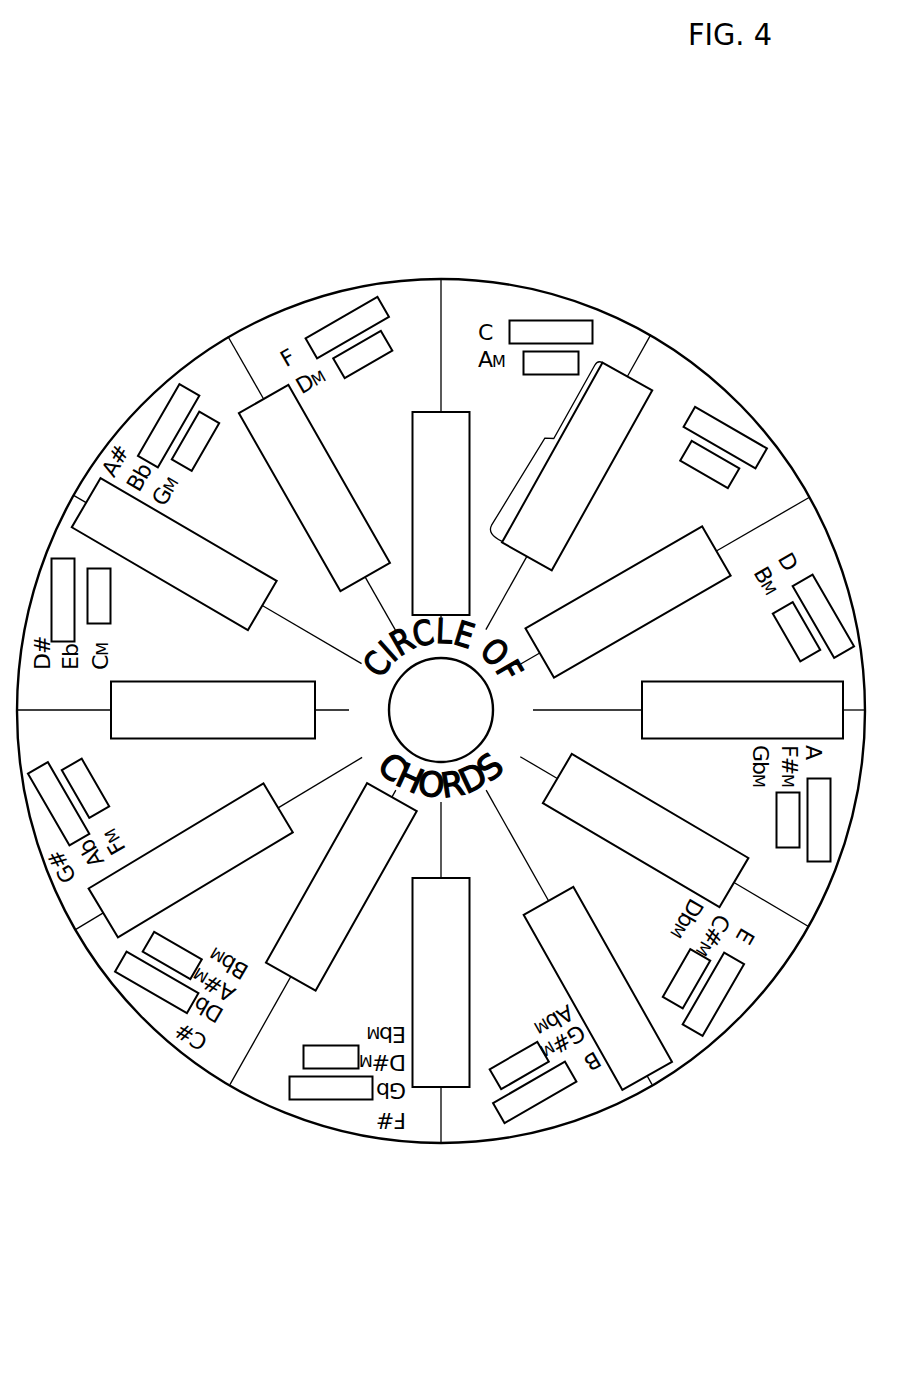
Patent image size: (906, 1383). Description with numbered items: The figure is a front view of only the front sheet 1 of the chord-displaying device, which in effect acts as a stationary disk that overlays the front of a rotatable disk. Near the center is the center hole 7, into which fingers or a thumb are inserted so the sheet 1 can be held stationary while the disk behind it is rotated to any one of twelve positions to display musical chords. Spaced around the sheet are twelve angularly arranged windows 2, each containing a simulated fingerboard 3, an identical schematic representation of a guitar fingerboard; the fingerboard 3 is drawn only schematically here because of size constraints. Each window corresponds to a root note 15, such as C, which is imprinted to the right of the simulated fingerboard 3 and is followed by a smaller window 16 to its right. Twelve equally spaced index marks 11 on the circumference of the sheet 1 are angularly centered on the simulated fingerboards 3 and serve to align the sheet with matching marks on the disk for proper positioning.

The front sheet 1 is at (250, 323).
The window 2 is at (247, 405).
The simulated fingerboard 3 is at (545, 440).
The center hole 7 is at (441, 710).
The index mark 11 is at (780, 508).
The root note 15 is at (678, 397).
The smaller window 16 is at (725, 422).